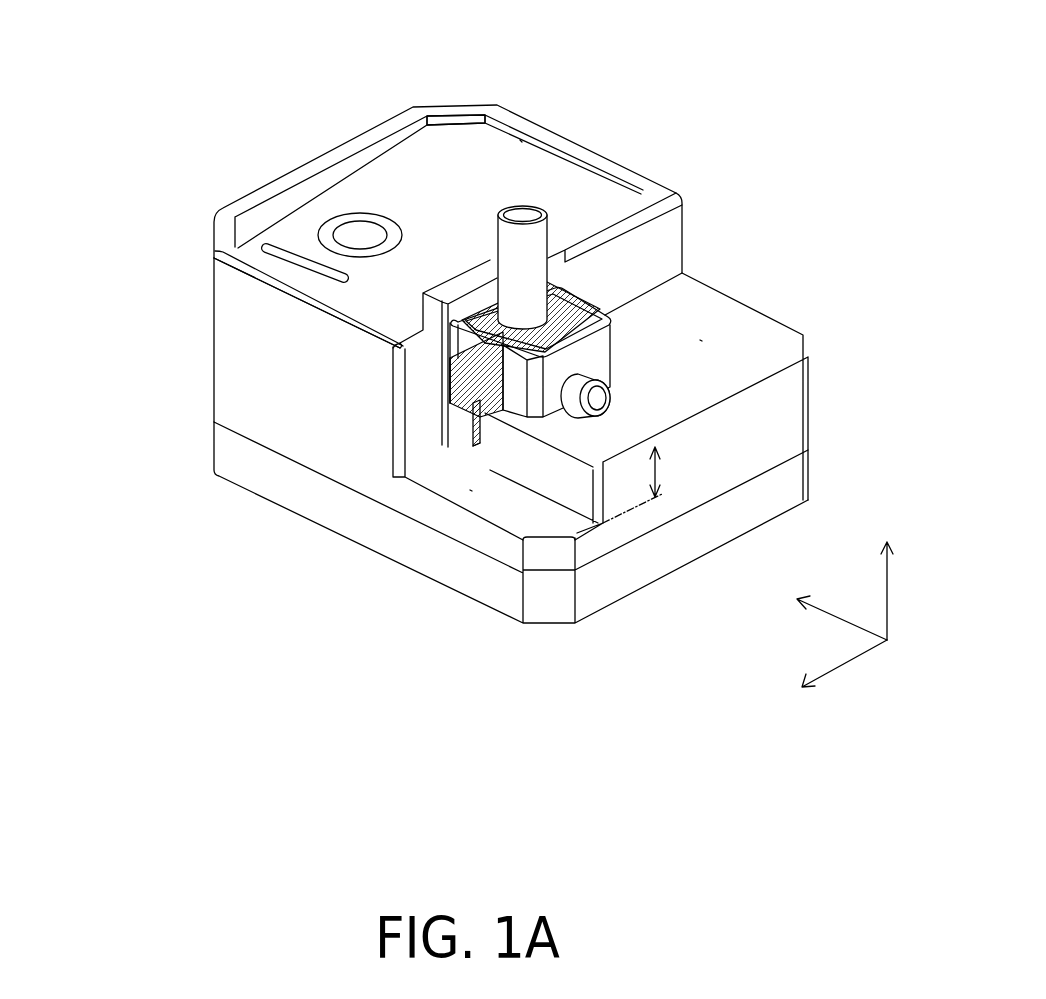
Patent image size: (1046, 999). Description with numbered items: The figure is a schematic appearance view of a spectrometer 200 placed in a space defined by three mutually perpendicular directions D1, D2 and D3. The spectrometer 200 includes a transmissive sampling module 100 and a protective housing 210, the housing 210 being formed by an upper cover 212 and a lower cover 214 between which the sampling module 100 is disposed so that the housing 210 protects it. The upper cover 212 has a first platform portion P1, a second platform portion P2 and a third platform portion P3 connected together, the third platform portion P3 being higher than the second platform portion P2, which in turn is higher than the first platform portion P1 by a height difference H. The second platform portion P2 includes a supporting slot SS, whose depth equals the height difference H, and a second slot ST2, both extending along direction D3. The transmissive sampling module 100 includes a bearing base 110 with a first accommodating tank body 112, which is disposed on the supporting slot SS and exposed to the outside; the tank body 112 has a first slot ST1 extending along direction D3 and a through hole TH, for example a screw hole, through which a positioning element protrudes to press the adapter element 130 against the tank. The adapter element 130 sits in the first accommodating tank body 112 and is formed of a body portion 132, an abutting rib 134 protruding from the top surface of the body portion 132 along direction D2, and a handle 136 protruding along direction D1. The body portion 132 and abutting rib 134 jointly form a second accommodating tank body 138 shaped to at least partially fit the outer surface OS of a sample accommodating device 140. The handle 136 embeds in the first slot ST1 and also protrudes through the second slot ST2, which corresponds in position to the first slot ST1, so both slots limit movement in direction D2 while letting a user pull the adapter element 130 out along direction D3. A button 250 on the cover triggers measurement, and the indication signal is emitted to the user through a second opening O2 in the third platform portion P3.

The transmissive sampling module 100 is at (655, 348).
The bearing base 110 is at (656, 318).
The first accommodating tank body 112 is at (642, 347).
The adapter element 130 is at (170, 727).
The body portion 132 is at (557, 366).
The abutting rib 134 is at (477, 297).
The handle 136 is at (485, 425).
The second accommodating tank body 138 is at (469, 346).
The sample accommodating device 140 is at (540, 207).
The spectrometer 200 is at (787, 818).
The protective housing 210 is at (453, 440).
The upper cover 212 is at (250, 364).
The lower cover 214 is at (242, 461).
The button 250 is at (360, 236).
The outer surface OS is at (499, 230).
The second opening O2 is at (303, 263).
The first platform portion P1 is at (490, 499).
The second platform portion P2 is at (753, 337).
The third platform portion P3 is at (518, 158).
The through hole TH is at (624, 404).
The supporting slot SS is at (620, 417).
The height difference H is at (639, 485).
The first slot ST1 is at (490, 380).
The second slot ST2 is at (473, 478).
The direction D1 is at (823, 673).
The direction D2 is at (823, 608).
The direction D3 is at (886, 571).